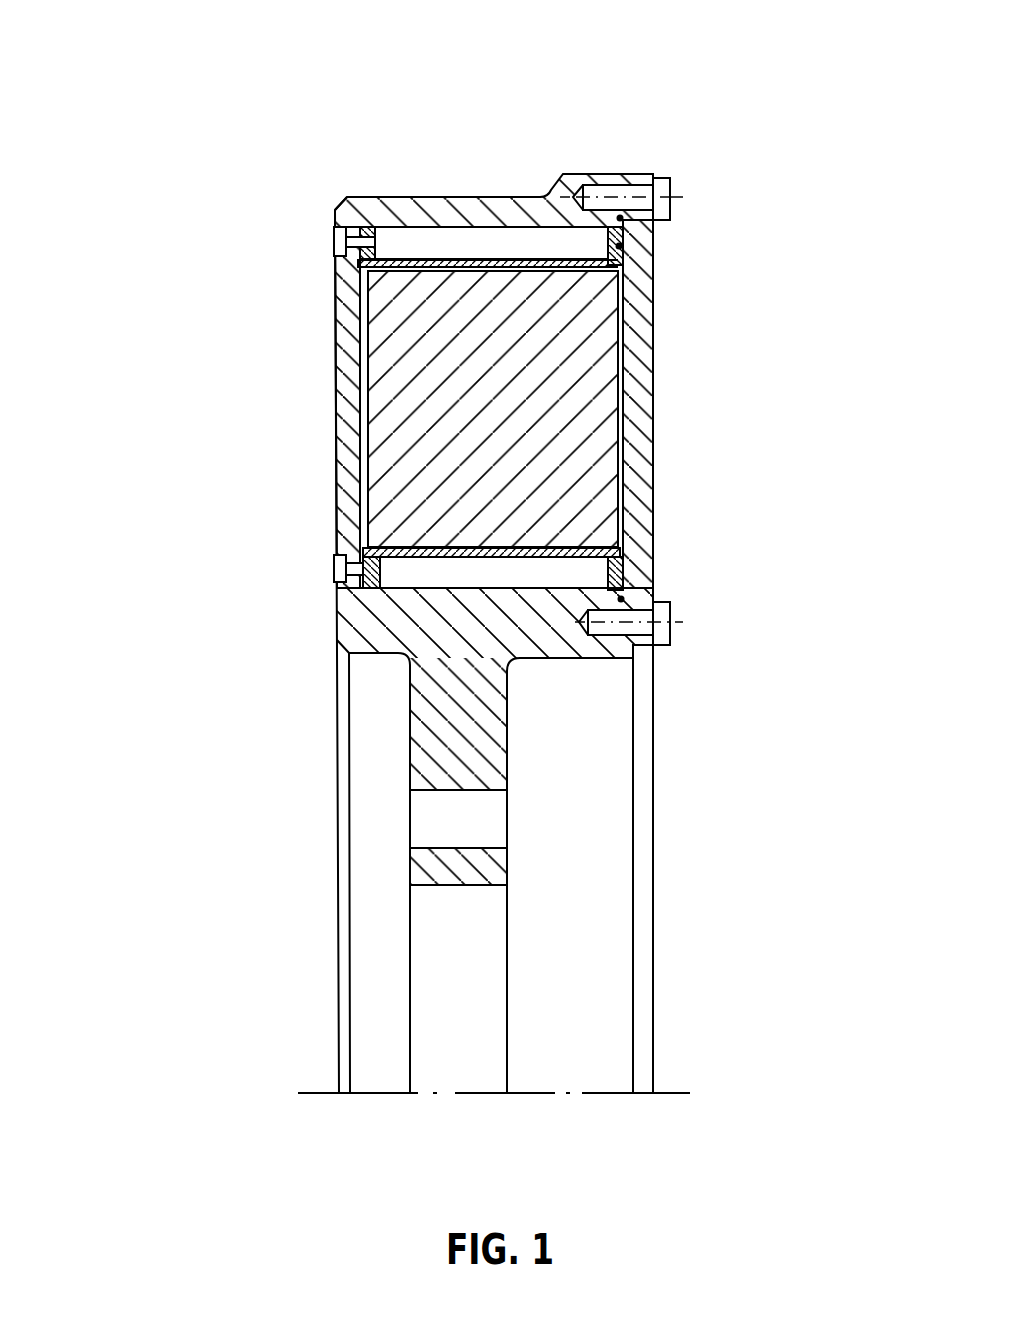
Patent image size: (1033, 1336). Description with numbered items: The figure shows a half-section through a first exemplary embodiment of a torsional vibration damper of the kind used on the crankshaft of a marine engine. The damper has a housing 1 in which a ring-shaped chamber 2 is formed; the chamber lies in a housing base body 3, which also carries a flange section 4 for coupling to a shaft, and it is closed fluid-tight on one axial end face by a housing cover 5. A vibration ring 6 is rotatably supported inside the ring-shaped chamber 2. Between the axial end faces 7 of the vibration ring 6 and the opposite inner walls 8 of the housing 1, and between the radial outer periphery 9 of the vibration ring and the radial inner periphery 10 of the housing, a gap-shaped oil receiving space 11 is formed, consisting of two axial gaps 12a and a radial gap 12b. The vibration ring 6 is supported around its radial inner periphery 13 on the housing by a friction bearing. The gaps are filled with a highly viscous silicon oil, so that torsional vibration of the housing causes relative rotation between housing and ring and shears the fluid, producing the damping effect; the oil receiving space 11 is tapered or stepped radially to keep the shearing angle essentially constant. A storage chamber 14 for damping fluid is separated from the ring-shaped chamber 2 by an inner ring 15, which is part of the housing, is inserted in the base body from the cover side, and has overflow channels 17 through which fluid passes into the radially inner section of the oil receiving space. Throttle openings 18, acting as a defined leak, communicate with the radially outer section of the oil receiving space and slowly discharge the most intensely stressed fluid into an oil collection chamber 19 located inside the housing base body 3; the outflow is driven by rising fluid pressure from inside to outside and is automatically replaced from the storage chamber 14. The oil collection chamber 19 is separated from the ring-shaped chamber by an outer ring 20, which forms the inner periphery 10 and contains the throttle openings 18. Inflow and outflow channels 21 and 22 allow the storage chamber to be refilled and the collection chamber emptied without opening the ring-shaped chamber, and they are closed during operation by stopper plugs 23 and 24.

The housing 1 is at (338, 206).
The ring-shaped chamber 2 is at (624, 250).
The housing base body 3 is at (343, 198).
The flange section 4 is at (452, 768).
The housing cover 5 is at (642, 256).
The vibration ring 6 is at (600, 337).
The axial end faces 7 is at (358, 437).
The inner walls 8 is at (340, 487).
The radial outer periphery 9 is at (366, 228).
The radial inner periphery 10 is at (445, 265).
The gap-shaped oil receiving space 11 is at (620, 457).
The axial gaps 12a is at (358, 378).
The radial gap 12b is at (412, 265).
The radial inner periphery 13 is at (650, 533).
The storage chamber 14 is at (512, 577).
The inner ring 15 is at (660, 624).
The overflow channels 17 is at (477, 553).
The throttle openings 18 is at (575, 264).
The oil collection chamber 19 is at (493, 243).
The outer ring 20 is at (458, 260).
The inflow channel 21 is at (338, 562).
The outflow channel 22 is at (336, 231).
The stopper plug 23 is at (345, 577).
The stopper plug 24 is at (333, 243).